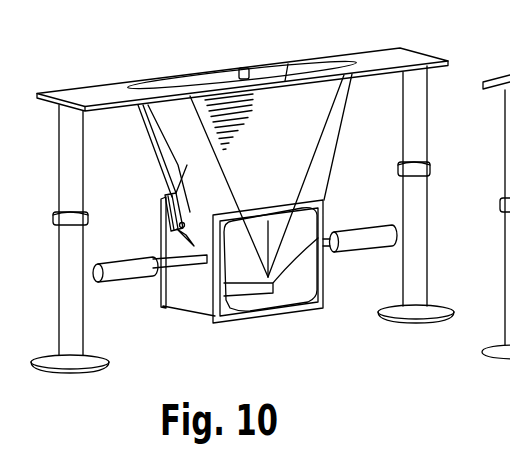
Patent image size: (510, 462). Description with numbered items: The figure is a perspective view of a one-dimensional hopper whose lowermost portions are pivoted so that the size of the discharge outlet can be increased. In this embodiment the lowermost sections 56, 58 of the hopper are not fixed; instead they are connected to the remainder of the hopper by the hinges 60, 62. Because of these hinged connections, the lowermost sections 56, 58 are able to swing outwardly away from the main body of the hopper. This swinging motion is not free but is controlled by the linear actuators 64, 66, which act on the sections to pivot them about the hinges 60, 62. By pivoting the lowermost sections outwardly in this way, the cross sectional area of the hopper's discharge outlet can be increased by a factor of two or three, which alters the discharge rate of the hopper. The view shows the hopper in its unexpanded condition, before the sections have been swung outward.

The lowermost section 56 is at (210, 269).
The lowermost section 58 is at (324, 282).
The hinge 60 is at (163, 209).
The hinge 62 is at (318, 198).
The linear actuator 64 is at (140, 278).
The linear actuator 66 is at (372, 246).